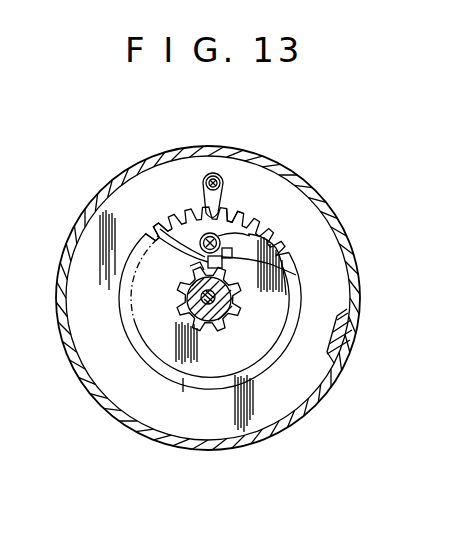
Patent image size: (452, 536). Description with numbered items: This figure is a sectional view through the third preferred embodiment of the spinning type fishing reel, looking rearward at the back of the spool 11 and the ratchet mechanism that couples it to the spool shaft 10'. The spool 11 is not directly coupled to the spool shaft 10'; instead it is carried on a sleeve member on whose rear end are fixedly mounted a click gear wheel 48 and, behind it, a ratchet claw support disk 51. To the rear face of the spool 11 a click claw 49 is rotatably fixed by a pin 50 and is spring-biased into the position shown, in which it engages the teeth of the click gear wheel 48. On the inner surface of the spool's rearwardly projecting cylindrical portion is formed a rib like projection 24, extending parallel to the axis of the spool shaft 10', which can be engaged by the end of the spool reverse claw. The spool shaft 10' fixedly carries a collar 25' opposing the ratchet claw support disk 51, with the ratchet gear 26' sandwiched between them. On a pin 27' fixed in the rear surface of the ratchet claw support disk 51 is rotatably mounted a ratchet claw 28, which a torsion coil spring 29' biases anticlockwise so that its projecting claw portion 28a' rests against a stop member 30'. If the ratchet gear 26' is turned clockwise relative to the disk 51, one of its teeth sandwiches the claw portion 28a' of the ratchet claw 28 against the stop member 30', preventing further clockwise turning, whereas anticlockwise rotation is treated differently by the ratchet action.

The spool 11 is at (86, 224).
The click gear wheel 48 is at (130, 342).
The ratchet claw support disk 51 is at (168, 343).
The torsion coil spring 29' is at (146, 219).
The pin 27' is at (243, 200).
The click claw 49 is at (205, 185).
The pin 50 is at (217, 178).
The lever 28 is at (252, 226).
The stop member 30' is at (277, 257).
The projecting claw portion 28a' is at (281, 271).
The spool shaft 10' is at (219, 315).
The ratchet gear 26' is at (157, 299).
The collar 25' is at (180, 280).
The rib like projection 24 is at (328, 338).